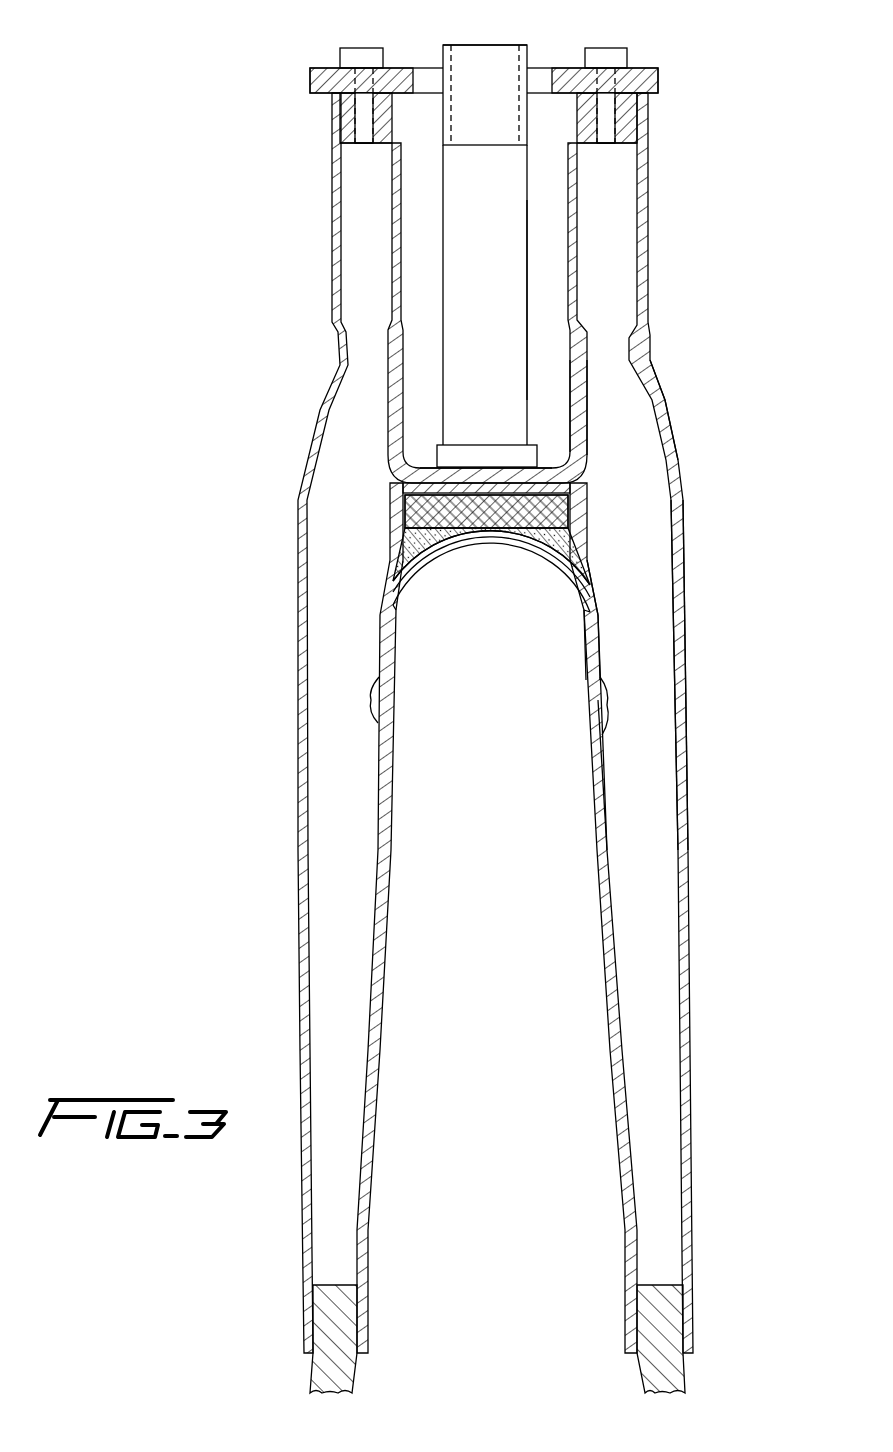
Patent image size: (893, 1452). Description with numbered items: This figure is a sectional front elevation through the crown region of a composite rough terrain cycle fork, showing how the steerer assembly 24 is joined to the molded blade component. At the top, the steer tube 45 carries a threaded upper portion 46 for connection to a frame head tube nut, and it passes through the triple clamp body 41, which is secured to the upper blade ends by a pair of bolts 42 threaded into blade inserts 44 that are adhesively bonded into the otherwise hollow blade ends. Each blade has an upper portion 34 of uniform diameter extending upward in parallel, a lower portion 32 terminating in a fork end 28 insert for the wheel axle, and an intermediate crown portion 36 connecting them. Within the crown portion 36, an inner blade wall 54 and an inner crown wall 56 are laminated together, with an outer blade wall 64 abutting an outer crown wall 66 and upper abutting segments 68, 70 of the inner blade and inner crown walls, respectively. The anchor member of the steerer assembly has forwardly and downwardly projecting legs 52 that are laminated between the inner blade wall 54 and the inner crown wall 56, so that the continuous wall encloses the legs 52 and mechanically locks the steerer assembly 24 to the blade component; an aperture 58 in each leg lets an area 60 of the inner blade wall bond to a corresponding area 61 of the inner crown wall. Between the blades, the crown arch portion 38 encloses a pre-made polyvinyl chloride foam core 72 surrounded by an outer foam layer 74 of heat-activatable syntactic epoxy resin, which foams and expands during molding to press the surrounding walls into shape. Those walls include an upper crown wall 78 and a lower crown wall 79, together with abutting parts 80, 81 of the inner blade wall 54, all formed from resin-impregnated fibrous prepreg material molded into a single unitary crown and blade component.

The steerer assembly 24 is at (540, 256).
The fork ends 28 is at (668, 1377).
The lower portion 32 is at (692, 1030).
The upper portion 34 is at (650, 198).
The intermediate crown portion 36 is at (681, 446).
The crown arch portion 38 is at (486, 562).
The triple clamp body 41 is at (660, 80).
The bolts 42 is at (612, 48).
The blade inserts 44 is at (646, 118).
The steer tube 45 is at (530, 300).
The threaded upper portion 46 is at (530, 47).
The legs 52 is at (393, 694).
The inner blade wall 54 is at (606, 752).
The inner crown wall 56 is at (597, 752).
The aperture 58 is at (598, 616).
The area of inner blade wall 60 is at (602, 650).
The area of inner crown wall 61 is at (583, 645).
The outer blade wall 64 is at (672, 762).
The outer crown wall 66 is at (688, 692).
The upper abutting segment of inner blade wall 68 is at (590, 392).
The upper abutting segment of inner crown wall 70 is at (572, 398).
The foam core 72 is at (580, 491).
The outer foam layer 74 is at (576, 554).
The upper crown wall 78 is at (476, 482).
The lower crown wall 79 is at (521, 556).
The abutting part of inner blade wall 80 is at (400, 504).
The abutting part of inner blade wall 81 is at (575, 516).